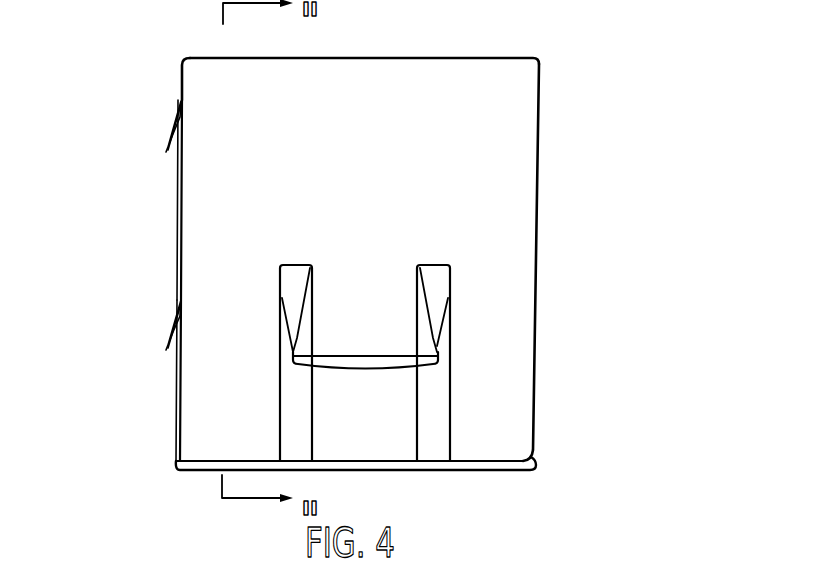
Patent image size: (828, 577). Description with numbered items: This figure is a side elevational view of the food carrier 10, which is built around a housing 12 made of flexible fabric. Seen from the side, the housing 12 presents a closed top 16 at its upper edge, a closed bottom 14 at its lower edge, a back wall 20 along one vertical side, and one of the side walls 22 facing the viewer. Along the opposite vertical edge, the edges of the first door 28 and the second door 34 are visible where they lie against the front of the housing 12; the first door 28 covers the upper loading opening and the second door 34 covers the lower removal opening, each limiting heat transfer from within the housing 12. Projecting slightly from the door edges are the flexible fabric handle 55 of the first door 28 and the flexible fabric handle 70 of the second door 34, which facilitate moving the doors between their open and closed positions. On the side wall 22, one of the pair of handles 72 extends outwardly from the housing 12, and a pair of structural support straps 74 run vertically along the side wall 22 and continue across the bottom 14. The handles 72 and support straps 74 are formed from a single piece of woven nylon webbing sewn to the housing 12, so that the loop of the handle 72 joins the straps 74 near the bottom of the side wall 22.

The food carrier 10 is at (604, 85).
The housing 12 is at (480, 50).
The closed bottom 14 is at (470, 470).
The closed top 16 is at (210, 57).
The back wall 20 is at (541, 216).
The side walls 22 is at (520, 290).
The first door 28 is at (177, 217).
The second door 34 is at (176, 410).
The flexible fabric handle 55 is at (165, 148).
The flexible fabric handle 70 is at (165, 345).
The handles 72 is at (370, 367).
The structural support straps 74 is at (442, 408).